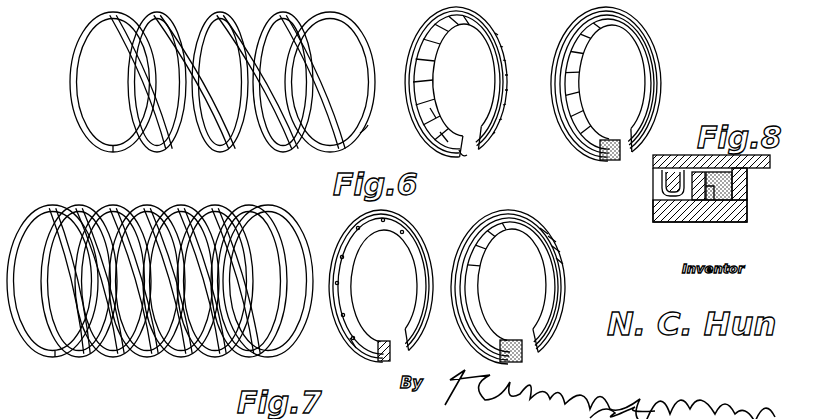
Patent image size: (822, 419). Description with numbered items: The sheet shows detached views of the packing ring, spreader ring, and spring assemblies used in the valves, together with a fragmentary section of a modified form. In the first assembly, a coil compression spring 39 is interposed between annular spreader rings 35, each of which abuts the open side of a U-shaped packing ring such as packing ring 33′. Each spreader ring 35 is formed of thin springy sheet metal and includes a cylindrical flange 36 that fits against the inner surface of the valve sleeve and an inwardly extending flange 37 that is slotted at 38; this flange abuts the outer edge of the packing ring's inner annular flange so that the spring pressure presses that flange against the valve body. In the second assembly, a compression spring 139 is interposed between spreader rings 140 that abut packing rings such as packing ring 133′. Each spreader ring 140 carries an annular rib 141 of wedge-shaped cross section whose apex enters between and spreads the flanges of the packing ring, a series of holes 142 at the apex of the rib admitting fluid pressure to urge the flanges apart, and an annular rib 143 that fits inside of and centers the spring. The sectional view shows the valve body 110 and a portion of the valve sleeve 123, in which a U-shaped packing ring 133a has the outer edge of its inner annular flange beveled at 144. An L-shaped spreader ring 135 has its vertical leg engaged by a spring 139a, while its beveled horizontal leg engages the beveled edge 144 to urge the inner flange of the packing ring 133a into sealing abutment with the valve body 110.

In FIG. 6, the coil compression spring 39 is at (253, 150).
In FIG. 6, the annular spreader ring 35 is at (500, 30).
In FIG. 6, the cylindrical flange 36 is at (465, 158).
In FIG. 6, the inwardly extending flange 37 is at (432, 112).
In FIG. 6, the slot 38 is at (446, 140).
In FIG. 6, the packing ring 33′ is at (650, 45).
In FIG. 7, the compression spring 139 is at (106, 356).
In FIG. 7, the spreader ring 140 is at (418, 232).
In FIG. 7, the annular rib 141 is at (386, 343).
In FIG. 7, the holes 142 is at (339, 282).
In FIG. 7, the annular rib 143 is at (352, 340).
In FIG. 7, the packing ring 133′ is at (548, 258).
In FIG. 8, the valve body 110 is at (750, 170).
In FIG. 8, the valve sleeve 123 is at (735, 222).
In FIG. 8, the spreader ring 135 is at (697, 196).
In FIG. 8, the spring 139a is at (665, 188).
In FIG. 8, the beveled edge 144 is at (713, 174).
In FIG. 8, the packing ring 133a is at (718, 196).